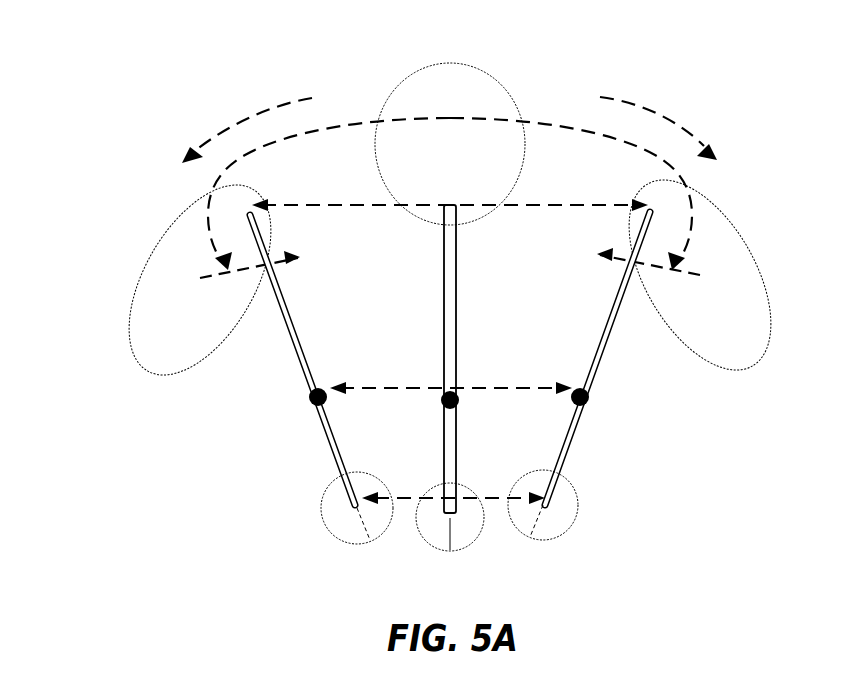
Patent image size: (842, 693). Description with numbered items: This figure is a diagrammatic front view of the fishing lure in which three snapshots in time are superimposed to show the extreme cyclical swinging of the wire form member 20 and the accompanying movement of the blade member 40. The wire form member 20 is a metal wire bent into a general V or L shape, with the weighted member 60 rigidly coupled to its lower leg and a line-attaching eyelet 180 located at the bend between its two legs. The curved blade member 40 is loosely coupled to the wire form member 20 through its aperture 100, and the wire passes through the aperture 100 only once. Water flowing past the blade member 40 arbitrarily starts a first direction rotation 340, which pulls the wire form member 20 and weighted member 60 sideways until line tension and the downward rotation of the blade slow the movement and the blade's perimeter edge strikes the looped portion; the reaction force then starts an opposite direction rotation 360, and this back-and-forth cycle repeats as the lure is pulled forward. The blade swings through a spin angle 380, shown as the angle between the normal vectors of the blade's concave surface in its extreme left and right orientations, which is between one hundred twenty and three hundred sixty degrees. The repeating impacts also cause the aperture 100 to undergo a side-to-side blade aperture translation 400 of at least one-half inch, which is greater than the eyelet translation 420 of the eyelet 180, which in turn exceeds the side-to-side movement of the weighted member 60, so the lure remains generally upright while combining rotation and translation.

The first direction rotation 340 is at (257, 110).
The opposite direction rotation 360 is at (657, 110).
The spin angle 380 is at (533, 123).
The aperture 100 is at (443, 213).
The blade aperture translation 400 is at (560, 213).
The eyelet translation 420 is at (375, 387).
The blade member 40 is at (163, 325).
The wire form member 20 is at (298, 345).
The eyelet 180 is at (307, 402).
The weighted member 60 is at (345, 525).